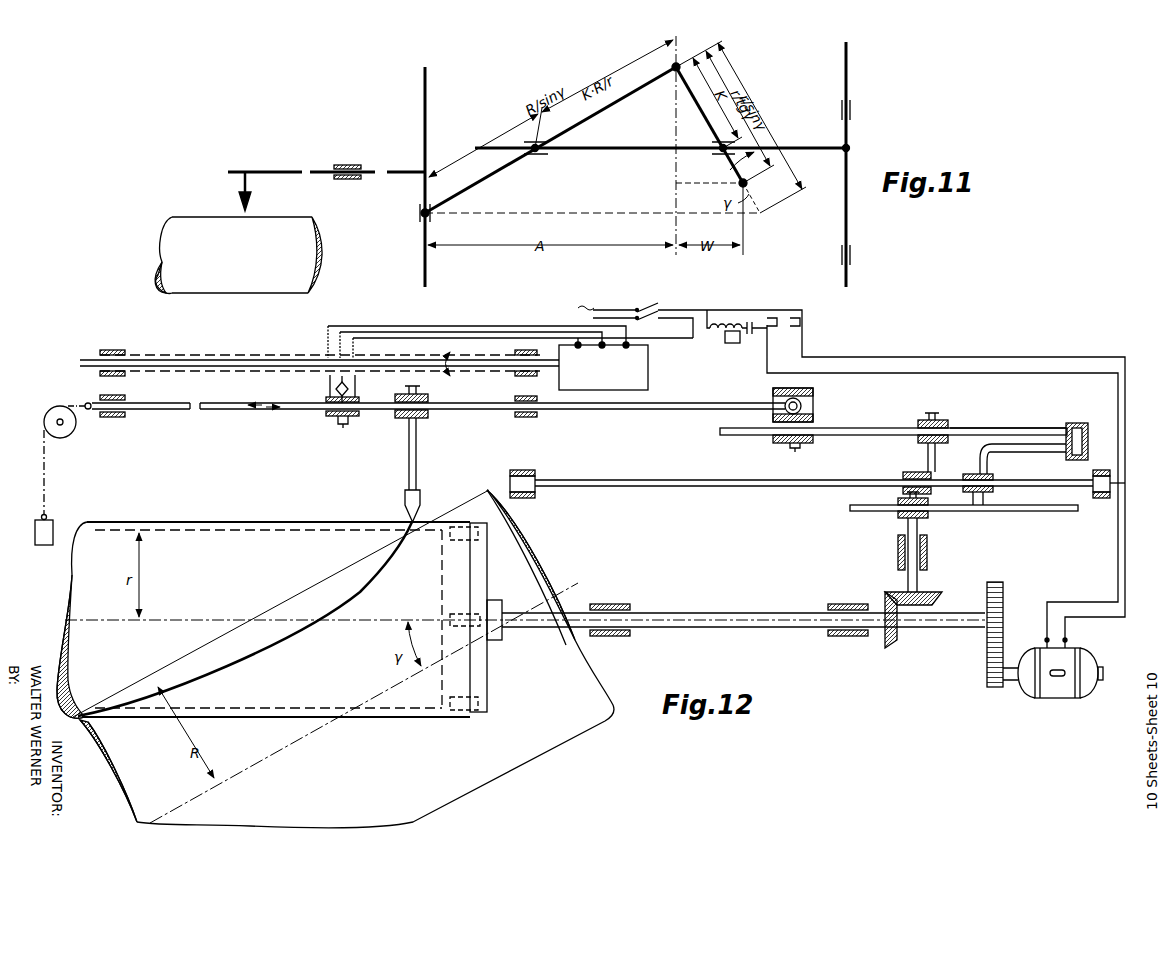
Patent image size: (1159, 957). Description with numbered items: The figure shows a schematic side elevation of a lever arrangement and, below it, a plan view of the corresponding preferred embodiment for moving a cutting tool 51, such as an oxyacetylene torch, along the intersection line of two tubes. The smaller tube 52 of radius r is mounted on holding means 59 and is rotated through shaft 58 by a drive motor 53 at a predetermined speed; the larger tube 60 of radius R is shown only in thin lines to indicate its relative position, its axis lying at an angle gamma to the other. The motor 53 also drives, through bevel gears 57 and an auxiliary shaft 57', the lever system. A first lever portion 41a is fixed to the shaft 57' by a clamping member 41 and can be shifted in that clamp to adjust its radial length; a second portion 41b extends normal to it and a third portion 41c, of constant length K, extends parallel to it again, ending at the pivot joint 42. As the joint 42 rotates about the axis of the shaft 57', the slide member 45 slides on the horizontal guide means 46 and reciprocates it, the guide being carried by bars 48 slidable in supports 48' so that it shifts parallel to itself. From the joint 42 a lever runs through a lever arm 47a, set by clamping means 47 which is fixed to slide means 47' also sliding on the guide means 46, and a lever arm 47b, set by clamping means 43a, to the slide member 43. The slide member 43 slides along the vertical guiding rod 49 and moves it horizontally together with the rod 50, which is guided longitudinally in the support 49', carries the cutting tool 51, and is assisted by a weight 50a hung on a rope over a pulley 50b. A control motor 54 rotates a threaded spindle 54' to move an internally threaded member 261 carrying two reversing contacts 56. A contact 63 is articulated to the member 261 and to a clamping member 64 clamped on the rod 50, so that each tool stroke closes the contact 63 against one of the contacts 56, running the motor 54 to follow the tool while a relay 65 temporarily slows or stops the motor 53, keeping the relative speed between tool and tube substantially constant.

In FIG. 11, the clamping member 41 is at (748, 184).
In FIG. 12, the clamping member 41 is at (900, 512).
In FIG. 12, the first lever portion 41a is at (963, 512).
In FIG. 12, the second lever portion 41b is at (983, 463).
In FIG. 12, the third lever portion 41c is at (1050, 450).
In FIG. 11, the pivot joint 42 is at (678, 63).
In FIG. 12, the pivot joint 42 is at (1089, 438).
In FIG. 11, the slide member 43 is at (420, 212).
In FIG. 12, the slide member 43 is at (779, 444).
In FIG. 12, the clamping means 43a is at (805, 447).
In FIG. 11, the slide member 45 is at (720, 153).
In FIG. 12, the slide member 45 is at (982, 493).
In FIG. 11, the horizontal guide means 46 is at (632, 152).
In FIG. 12, the horizontal guide means 46 is at (678, 488).
In FIG. 11, the clamping means 47 is at (550, 140).
In FIG. 12, the clamping means 47 is at (951, 430).
In FIG. 12, the slide means 47' is at (900, 471).
In FIG. 12, the lever arm 47a is at (1025, 418).
In FIG. 12, the lever arm 47b is at (875, 428).
In FIG. 11, the bars 48 is at (871, 164).
In FIG. 12, the bars 48 is at (835, 487).
In FIG. 12, the supports 48' is at (500, 478).
In FIG. 11, the vertical guide means 49 is at (449, 177).
In FIG. 12, the vertical guide means 49 is at (816, 404).
In FIG. 11, the support 49' is at (350, 160).
In FIG. 12, the support 49' is at (547, 419).
In FIG. 11, the rod 50 is at (268, 168).
In FIG. 12, the rod 50 is at (640, 411).
In FIG. 12, the weight 50a is at (50, 534).
In FIG. 12, the pulley 50b is at (72, 432).
In FIG. 11, the cutting tool 51 is at (238, 200).
In FIG. 12, the cutting tool 51 is at (403, 501).
In FIG. 11, the smaller tube 52 is at (232, 282).
In FIG. 12, the smaller tube 52 is at (252, 540).
In FIG. 12, the drive motor 53 is at (1060, 700).
In FIG. 12, the control motor 54 is at (624, 364).
In FIG. 12, the threaded spindle 54' is at (319, 355).
In FIG. 12, the reversing contacts 56 is at (358, 387).
In FIG. 12, the bevel gears 57 is at (913, 637).
In FIG. 12, the auxiliary shaft 57' is at (894, 560).
In FIG. 12, the shaft 58 is at (731, 629).
In FIG. 12, the holding means 59 is at (483, 672).
In FIG. 12, the larger tube 60 is at (457, 788).
In FIG. 12, the contact 63 is at (350, 382).
In FIG. 12, the clamping member 64 is at (352, 420).
In FIG. 12, the relay 65 is at (727, 340).
In FIG. 12, the threaded member 261 is at (348, 372).